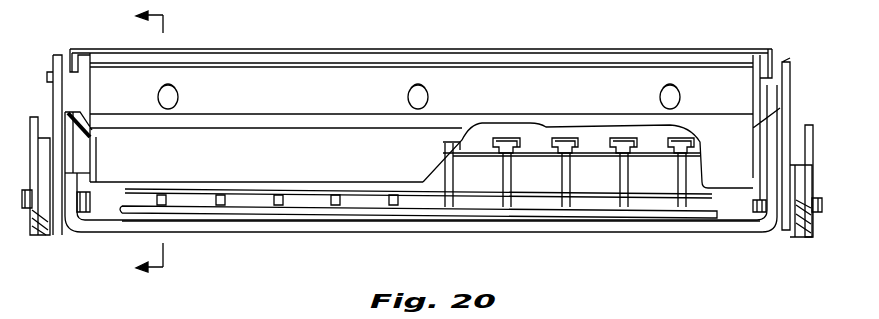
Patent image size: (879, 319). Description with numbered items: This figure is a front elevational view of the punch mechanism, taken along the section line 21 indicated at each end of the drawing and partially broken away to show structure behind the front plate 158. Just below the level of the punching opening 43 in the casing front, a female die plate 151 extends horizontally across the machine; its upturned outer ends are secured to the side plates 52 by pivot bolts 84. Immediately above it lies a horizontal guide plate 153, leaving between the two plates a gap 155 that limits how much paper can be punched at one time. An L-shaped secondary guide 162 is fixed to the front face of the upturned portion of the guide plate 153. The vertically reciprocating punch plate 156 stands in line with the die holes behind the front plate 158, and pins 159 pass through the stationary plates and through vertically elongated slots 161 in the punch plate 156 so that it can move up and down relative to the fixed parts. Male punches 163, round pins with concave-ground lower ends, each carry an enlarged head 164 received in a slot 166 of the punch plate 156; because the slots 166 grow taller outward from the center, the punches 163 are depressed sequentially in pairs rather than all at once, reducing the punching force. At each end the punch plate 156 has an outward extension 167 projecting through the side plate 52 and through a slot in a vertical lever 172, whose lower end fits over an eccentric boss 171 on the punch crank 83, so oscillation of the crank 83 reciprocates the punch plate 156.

The section line 21- 21 is at (148, 141).
The punching opening 43 is at (103, 204).
The side plate 52 is at (775, 124).
The punch crank 83 is at (811, 134).
The pivot bolt 84 is at (820, 202).
The female die plate 151 is at (268, 225).
The guide plate 153 is at (595, 210).
The gap 155 is at (536, 212).
The punch plate 156 is at (532, 138).
The front plate 158 is at (312, 160).
The pin 159 is at (682, 98).
The vertically elongated slot 161 is at (668, 88).
The L-shaped secondary guide 162 is at (648, 198).
The male punch 163 is at (568, 178).
The enlarged head 164 is at (553, 138).
The slot 166 is at (609, 146).
The outward extension 167 is at (792, 62).
The eccentric boss 171 is at (810, 231).
The vertical lever 172 is at (776, 84).